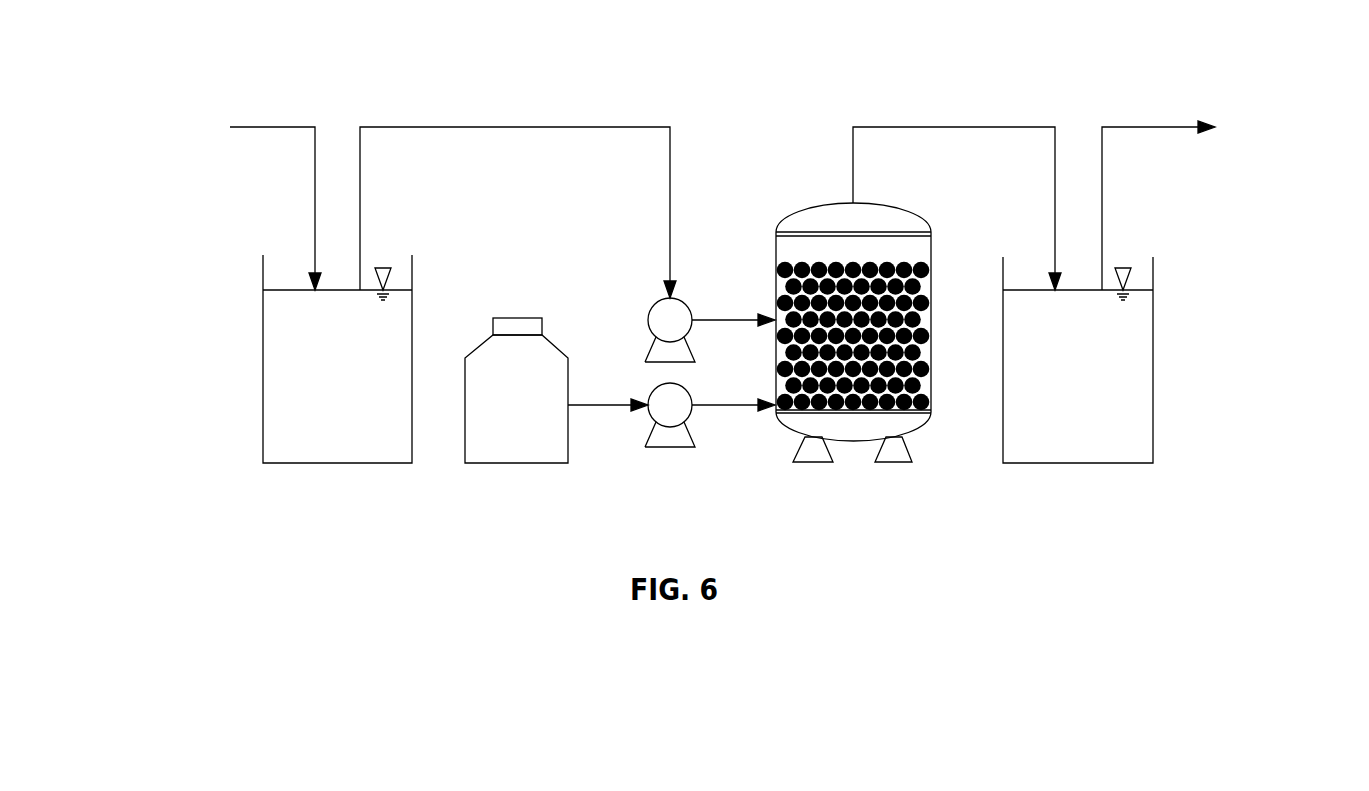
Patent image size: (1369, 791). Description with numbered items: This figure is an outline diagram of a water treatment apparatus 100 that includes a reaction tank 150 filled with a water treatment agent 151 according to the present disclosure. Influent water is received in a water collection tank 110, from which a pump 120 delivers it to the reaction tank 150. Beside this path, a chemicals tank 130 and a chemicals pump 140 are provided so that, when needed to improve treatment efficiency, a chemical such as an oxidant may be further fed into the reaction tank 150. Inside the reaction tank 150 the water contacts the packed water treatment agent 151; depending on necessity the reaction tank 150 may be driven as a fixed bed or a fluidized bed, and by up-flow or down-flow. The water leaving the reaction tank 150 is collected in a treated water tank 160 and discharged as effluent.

The water treatment apparatus 100 is at (280, 49).
The water collection tank 110 is at (337, 463).
The pump 120 is at (694, 348).
The chemicals tank 130 is at (518, 463).
The chemicals pump 140 is at (694, 433).
The reaction tank 150 is at (821, 315).
The water treatment agent 151 is at (775, 266).
The treated water tank 160 is at (1082, 463).